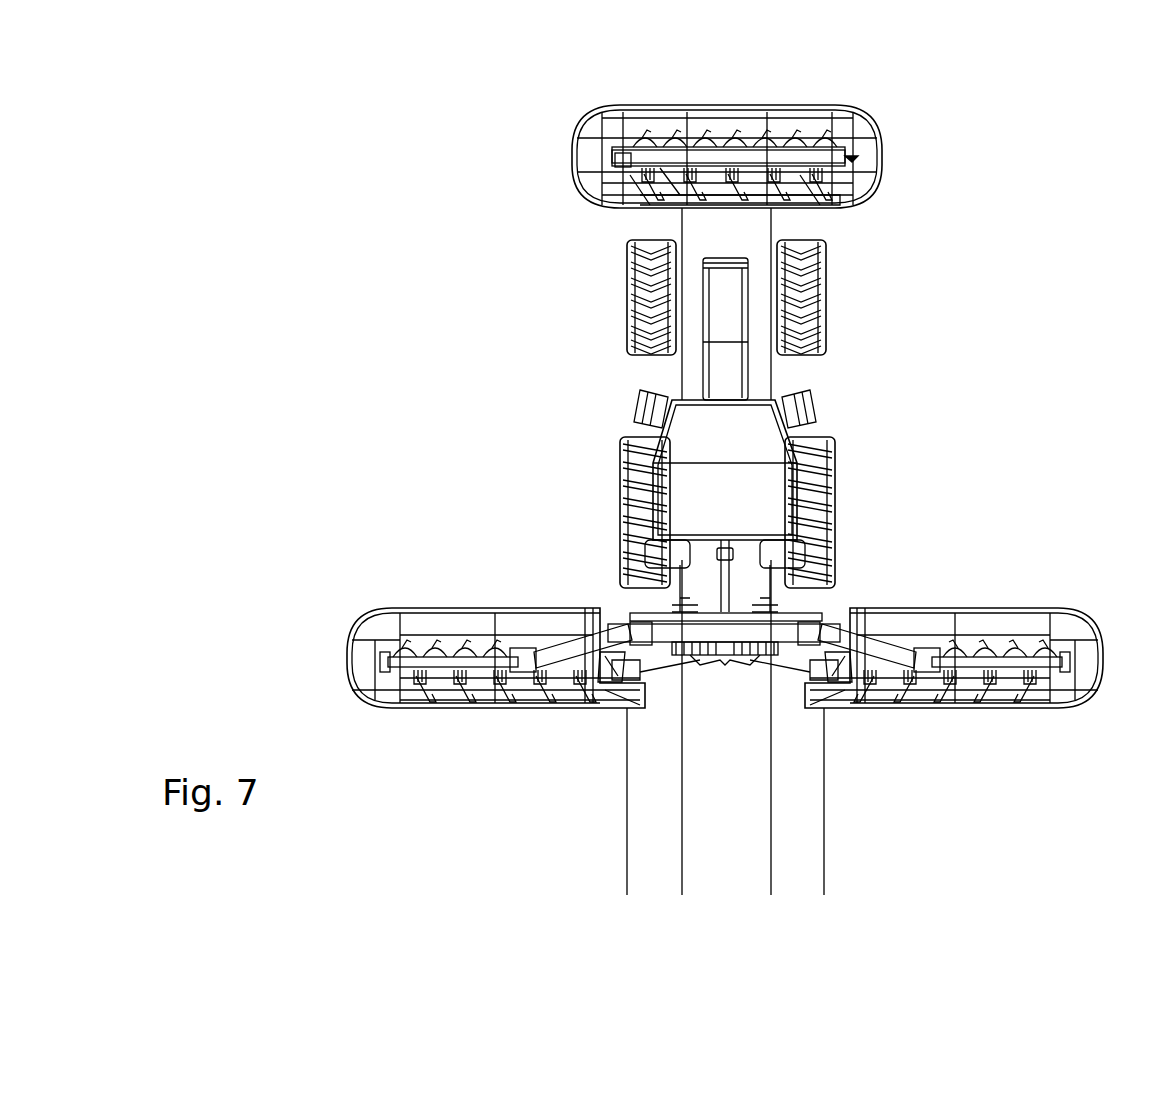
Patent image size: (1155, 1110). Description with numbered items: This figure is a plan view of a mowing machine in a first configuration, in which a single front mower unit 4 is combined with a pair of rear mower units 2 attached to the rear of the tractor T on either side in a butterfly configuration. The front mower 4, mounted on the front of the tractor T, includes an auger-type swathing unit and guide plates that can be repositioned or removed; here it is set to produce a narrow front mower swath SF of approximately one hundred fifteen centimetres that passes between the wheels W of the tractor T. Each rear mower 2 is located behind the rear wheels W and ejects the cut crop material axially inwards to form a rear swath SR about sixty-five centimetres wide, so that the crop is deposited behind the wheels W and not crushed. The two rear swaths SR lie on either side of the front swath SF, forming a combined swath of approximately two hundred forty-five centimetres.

The rear mower unit 2 is at (347, 580).
The front mower unit 4 is at (880, 96).
The tractor T is at (683, 432).
The wheels W is at (628, 265).
The front mower swath SF is at (755, 768).
The rear swath SR is at (640, 802).